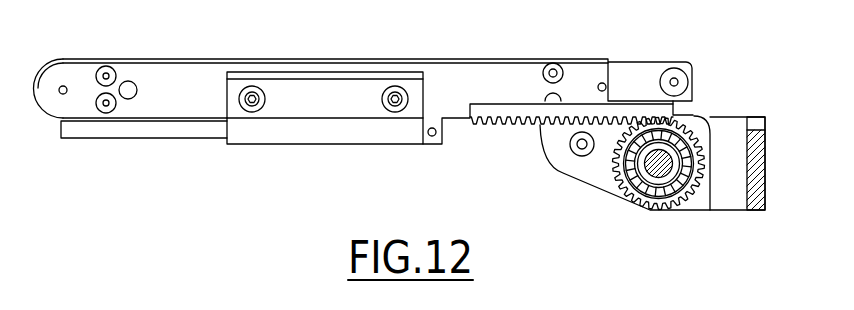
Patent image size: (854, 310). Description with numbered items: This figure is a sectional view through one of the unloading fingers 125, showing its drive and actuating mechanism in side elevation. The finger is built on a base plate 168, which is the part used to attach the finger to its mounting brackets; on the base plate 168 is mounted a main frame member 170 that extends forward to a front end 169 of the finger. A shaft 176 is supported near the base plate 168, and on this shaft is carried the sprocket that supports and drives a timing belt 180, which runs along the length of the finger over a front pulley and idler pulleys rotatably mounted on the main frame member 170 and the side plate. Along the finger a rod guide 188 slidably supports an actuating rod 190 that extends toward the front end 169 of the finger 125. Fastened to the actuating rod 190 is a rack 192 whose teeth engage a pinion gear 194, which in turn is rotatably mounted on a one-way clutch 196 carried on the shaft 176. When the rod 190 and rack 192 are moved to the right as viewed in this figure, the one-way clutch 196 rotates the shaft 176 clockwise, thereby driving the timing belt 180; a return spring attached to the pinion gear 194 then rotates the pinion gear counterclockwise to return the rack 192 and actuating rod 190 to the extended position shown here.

The unloading finger 125 is at (213, 75).
The base plate 168 is at (755, 123).
The front end 169 is at (79, 77).
The main frame member 170 is at (725, 200).
The shaft 176 is at (652, 172).
The timing belt 180 is at (303, 58).
The rod guide 188 is at (263, 133).
The actuating rod 190 is at (143, 130).
The rack 192 is at (481, 113).
The pinion gear 194 is at (668, 204).
The one-way clutch 196 is at (647, 187).